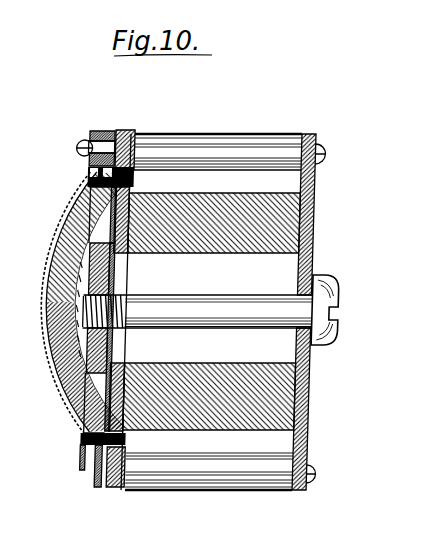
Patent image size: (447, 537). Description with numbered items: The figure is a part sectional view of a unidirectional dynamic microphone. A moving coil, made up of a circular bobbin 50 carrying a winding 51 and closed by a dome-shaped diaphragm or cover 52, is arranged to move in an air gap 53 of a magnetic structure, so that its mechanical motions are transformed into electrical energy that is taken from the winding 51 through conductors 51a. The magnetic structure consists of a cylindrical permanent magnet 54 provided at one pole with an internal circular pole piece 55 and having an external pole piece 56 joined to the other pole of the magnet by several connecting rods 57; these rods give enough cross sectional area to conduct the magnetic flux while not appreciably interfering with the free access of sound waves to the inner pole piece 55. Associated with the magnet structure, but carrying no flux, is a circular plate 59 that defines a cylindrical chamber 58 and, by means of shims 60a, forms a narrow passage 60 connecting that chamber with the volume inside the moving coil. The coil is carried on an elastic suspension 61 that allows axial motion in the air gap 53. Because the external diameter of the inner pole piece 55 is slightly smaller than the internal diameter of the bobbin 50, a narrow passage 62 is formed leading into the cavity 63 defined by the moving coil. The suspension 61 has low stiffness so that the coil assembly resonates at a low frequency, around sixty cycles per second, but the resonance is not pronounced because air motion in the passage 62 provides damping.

The circular bobbin 50 is at (92, 423).
The winding 51 is at (96, 470).
The conductors 51a is at (199, 443).
The dome-shaped diaphragm or cover 52 is at (44, 301).
The air gap 53 is at (127, 452).
The cylindrical permanent magnet 54 is at (238, 216).
The internal circular pole piece 55 is at (122, 221).
The external pole piece 56 is at (128, 132).
The connecting rods 57 is at (246, 152).
The cylindrical chamber 58 is at (278, 273).
The circular plate 59 is at (96, 266).
The narrow passage 60 is at (103, 382).
The shims 60a is at (113, 233).
The elastic suspension 61 is at (88, 136).
The narrow passage 62 is at (136, 189).
The cavity 63 is at (72, 312).